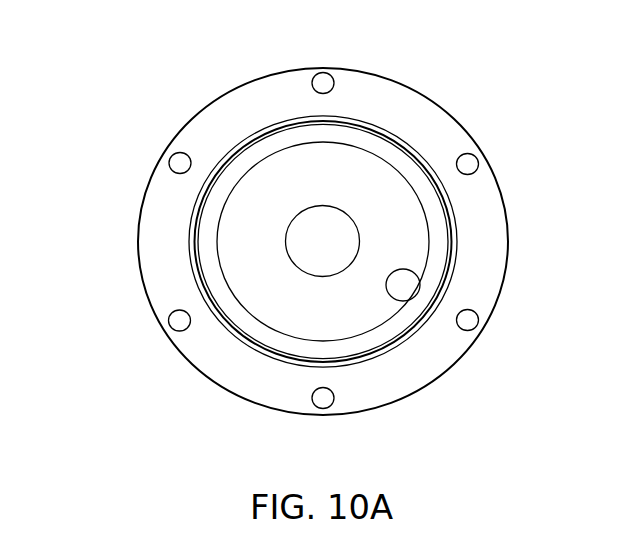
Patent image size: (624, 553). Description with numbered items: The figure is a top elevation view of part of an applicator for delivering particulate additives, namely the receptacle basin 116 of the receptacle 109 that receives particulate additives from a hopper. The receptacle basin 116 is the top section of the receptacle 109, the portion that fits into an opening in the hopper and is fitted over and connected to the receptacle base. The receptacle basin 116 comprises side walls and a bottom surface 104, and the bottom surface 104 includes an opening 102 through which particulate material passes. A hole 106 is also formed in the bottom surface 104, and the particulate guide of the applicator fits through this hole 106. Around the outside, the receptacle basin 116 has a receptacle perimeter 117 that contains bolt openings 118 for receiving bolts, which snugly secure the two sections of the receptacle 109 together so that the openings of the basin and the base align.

The opening 102 is at (403, 285).
The bottom surface 104 is at (282, 182).
The hole 106 is at (328, 245).
The receptacle 109 is at (122, 255).
The receptacle basin 116 is at (233, 305).
The receptacle perimeter 117 is at (408, 118).
The bolt openings 118 is at (331, 72).